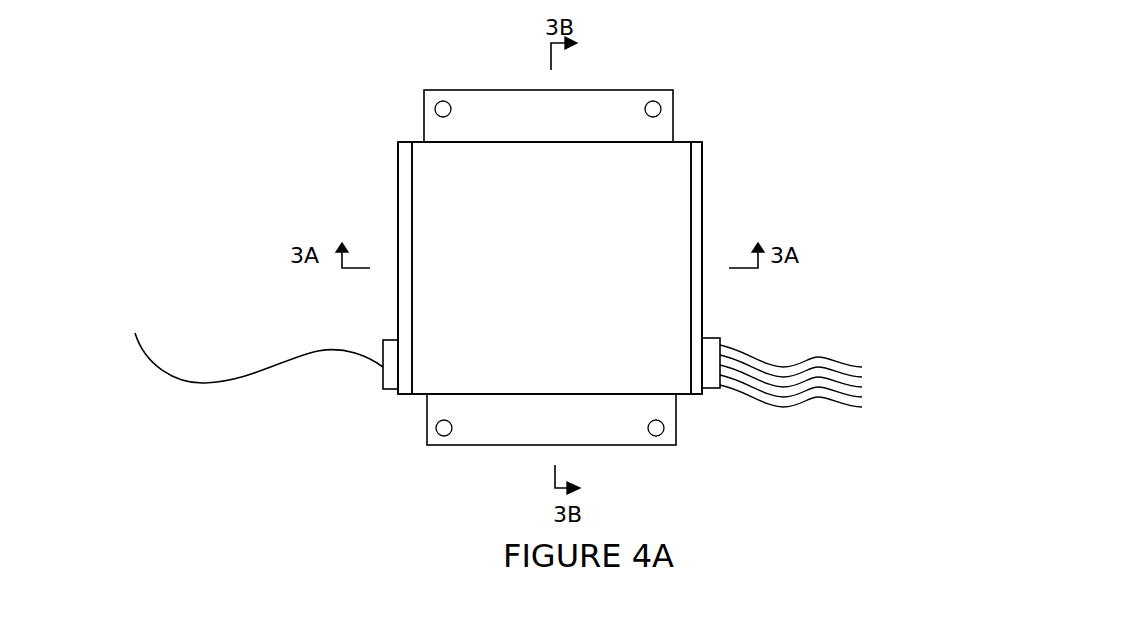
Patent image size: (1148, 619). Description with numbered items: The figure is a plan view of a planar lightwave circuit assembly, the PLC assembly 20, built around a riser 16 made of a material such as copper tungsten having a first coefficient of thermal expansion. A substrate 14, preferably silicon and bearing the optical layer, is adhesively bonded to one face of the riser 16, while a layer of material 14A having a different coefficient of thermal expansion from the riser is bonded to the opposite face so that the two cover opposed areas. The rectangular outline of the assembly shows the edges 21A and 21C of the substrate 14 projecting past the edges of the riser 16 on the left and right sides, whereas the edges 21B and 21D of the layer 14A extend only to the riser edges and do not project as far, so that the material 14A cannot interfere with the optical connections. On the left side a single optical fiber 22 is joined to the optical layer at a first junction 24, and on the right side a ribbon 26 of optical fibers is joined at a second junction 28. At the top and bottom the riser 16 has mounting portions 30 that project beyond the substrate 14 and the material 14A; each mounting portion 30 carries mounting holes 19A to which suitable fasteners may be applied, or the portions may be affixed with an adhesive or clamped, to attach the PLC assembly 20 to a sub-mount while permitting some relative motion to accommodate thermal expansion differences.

The substrate 14 is at (702, 188).
The layer of material 14A is at (673, 167).
The riser 16 is at (573, 115).
The mounting holes 19A is at (447, 436).
The PLC assembly 20 is at (394, 83).
The edge of substrate 21A is at (703, 285).
The edge of layer 21B is at (692, 319).
The edge of substrate 21C is at (397, 302).
The edge of layer 21D is at (412, 325).
The optical fiber 22 is at (287, 358).
The first junction 24 is at (393, 390).
The ribbon of optical fibers 26 is at (820, 357).
The second junction 28 is at (707, 393).
The mounting portions 30 is at (493, 110).